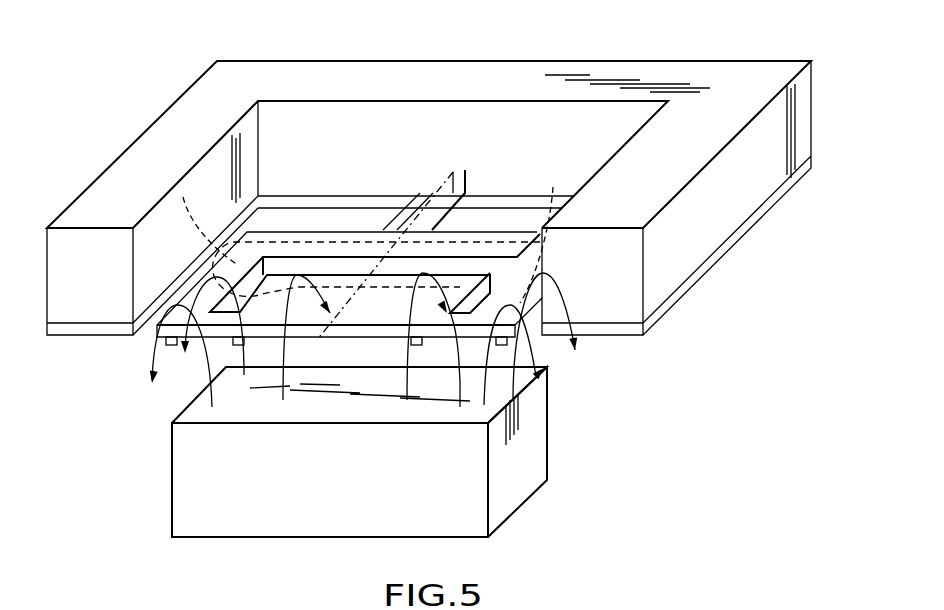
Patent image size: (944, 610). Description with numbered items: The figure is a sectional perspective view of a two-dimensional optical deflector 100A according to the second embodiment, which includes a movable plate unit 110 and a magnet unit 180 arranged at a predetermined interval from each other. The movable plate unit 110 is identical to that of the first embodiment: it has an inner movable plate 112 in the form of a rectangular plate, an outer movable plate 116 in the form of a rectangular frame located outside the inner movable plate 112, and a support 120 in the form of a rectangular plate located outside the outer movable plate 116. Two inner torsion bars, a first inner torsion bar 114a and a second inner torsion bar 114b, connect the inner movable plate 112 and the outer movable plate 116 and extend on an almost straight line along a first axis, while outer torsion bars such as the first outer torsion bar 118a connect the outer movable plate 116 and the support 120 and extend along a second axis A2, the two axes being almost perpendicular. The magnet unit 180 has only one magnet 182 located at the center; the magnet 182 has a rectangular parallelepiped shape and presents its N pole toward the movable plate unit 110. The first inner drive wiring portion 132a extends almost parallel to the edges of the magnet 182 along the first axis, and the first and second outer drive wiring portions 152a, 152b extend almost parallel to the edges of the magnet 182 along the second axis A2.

The two-dimensional optical deflector 100A is at (118, 70).
The movable plate unit 110 is at (826, 55).
The support 120 is at (372, 67).
The inner movable plate 112 is at (294, 232).
The outer movable plate 116 is at (501, 197).
The first inner drive wiring portion 132a is at (334, 242).
The first outer torsion bar 118a is at (447, 197).
The second axis A2 is at (453, 172).
The first outer drive wiring portion 152a is at (553, 187).
The second outer drive wiring portion 152b is at (183, 197).
The first inner torsion bar 114a is at (460, 407).
The second inner torsion bar 114b is at (244, 375).
The magnet unit 180 is at (581, 412).
The magnet 182 is at (540, 456).